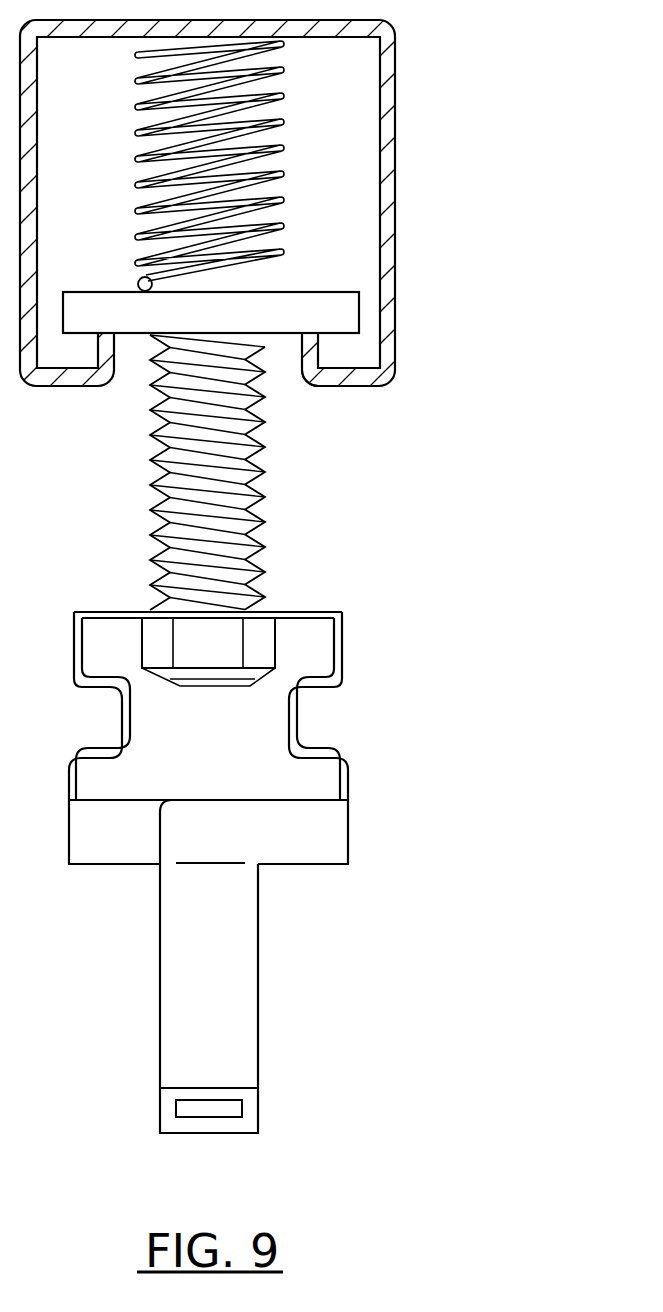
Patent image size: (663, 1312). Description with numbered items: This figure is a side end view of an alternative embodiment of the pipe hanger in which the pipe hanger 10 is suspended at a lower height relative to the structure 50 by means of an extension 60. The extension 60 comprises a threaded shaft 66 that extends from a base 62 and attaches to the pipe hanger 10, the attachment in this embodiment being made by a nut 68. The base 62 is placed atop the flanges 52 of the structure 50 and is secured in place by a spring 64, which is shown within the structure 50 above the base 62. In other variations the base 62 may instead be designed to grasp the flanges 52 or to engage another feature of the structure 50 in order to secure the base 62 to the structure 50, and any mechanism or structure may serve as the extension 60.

The pipe hanger 10 is at (358, 920).
The structure 50 is at (395, 204).
The flanges 52 is at (345, 387).
The extension 60 is at (298, 503).
The base 62 is at (322, 302).
The spring 64 is at (148, 162).
The threaded shaft 66 is at (172, 501).
The nut 68 is at (257, 642).